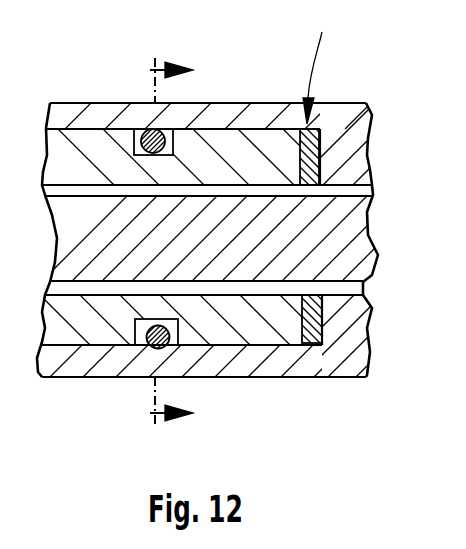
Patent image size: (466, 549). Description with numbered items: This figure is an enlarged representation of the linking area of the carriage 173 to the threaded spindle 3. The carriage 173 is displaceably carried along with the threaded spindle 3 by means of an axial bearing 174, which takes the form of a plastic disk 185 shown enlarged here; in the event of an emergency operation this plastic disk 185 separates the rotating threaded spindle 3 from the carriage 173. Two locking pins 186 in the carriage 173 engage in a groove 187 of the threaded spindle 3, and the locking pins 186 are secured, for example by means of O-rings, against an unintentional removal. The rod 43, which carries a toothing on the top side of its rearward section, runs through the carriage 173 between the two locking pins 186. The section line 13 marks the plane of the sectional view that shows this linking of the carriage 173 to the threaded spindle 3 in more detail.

The threaded spindle 3 is at (260, 137).
The section line XIII-XIII 13 is at (169, 244).
The rod 43 is at (362, 242).
The carriage 173 is at (345, 118).
The axial bearing 174 is at (315, 64).
The plastic disk 185 is at (312, 335).
The locking pins 186 is at (168, 347).
The groove 187 is at (172, 142).